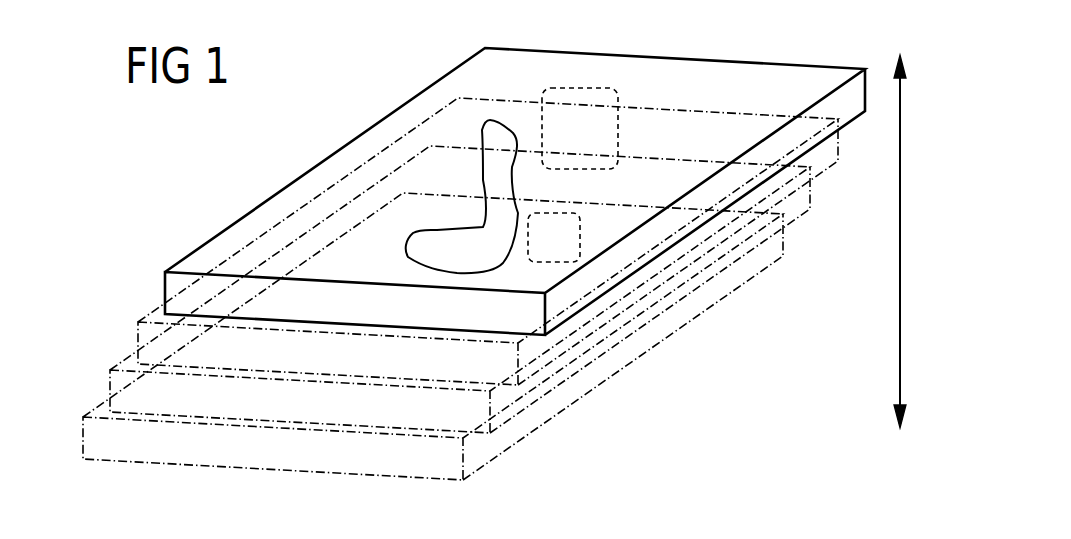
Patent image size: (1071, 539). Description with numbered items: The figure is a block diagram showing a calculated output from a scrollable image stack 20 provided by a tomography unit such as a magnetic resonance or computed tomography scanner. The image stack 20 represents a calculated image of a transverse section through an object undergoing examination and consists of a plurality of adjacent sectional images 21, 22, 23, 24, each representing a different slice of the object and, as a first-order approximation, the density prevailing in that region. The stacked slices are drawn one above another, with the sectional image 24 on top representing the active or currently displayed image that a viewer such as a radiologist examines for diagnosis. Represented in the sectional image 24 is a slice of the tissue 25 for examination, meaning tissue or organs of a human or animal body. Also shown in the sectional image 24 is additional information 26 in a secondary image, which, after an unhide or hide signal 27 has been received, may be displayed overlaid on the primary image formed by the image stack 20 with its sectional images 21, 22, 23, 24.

The image stack 20 is at (455, 264).
The sectional image 21 is at (93, 433).
The sectional image 22 is at (120, 383).
The sectional image 23 is at (147, 335).
The sectional image 24 is at (165, 289).
The tissue for examination 25 is at (483, 178).
The additional information 26 is at (583, 88).
The unhide or hide signal 27 is at (902, 257).